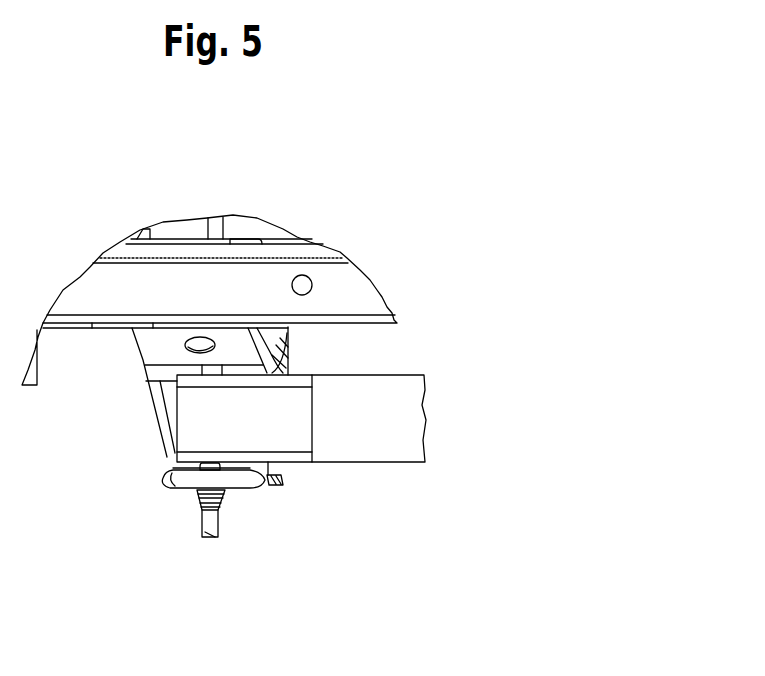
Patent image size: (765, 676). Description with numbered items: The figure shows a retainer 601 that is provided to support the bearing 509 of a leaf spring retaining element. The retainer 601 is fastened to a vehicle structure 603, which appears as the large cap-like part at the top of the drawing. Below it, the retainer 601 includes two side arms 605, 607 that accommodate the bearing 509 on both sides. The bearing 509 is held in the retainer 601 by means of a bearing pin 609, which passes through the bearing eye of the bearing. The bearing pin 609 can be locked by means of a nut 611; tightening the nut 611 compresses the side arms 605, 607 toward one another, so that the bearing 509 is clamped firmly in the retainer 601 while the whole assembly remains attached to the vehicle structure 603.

The vehicle structure 603 is at (360, 282).
The side arm 605 is at (280, 352).
The bearing 509 is at (175, 452).
The retainer 601 is at (283, 482).
The side arm 607 is at (163, 480).
The bearing pin 609 is at (215, 537).
The nut 611 is at (225, 495).